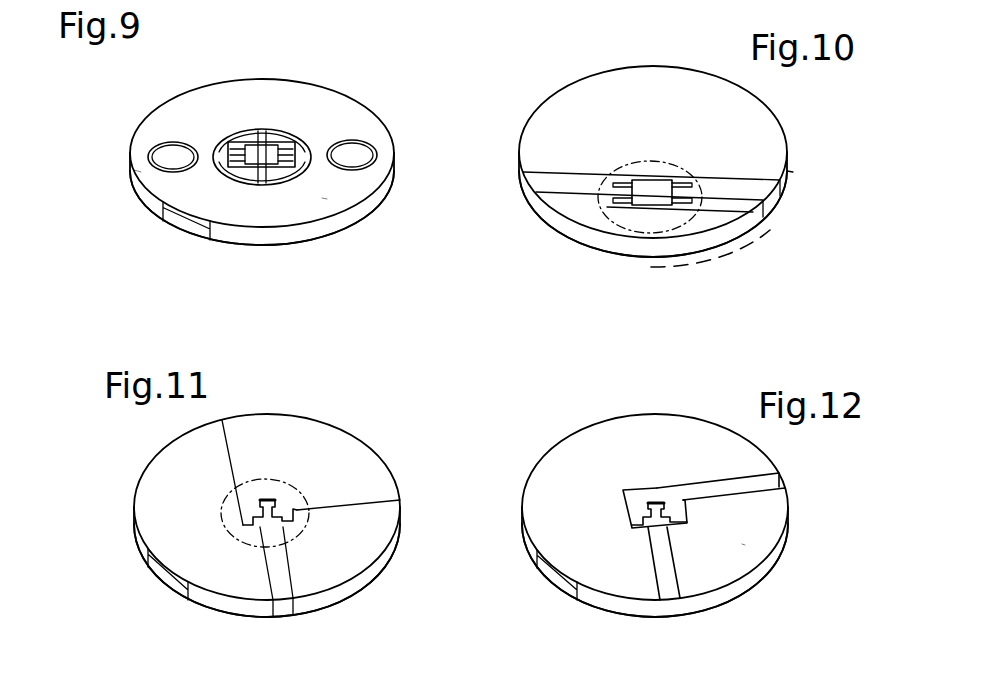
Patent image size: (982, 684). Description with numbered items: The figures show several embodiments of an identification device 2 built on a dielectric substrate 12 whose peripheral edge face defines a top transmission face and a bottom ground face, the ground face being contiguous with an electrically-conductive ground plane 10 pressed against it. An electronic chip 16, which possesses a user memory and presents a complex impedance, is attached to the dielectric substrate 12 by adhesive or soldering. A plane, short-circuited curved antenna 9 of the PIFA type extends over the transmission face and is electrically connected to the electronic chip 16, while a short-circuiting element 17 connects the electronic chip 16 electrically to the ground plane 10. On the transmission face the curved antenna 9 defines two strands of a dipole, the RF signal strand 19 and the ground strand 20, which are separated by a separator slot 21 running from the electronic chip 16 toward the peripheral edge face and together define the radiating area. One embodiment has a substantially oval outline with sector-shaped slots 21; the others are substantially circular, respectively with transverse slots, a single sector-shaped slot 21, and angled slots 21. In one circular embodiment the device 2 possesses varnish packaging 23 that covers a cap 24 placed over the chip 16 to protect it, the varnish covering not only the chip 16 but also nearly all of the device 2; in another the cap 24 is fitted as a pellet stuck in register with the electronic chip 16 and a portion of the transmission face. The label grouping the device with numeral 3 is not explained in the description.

In FIG. 9, the identification device 2 is at (104, 200).
In FIG. 10, the identification device 2 is at (545, 40).
In FIG. 11, the identification device 2 is at (100, 468).
In FIG. 12, the identification device 2 is at (518, 455).
In FIG. 10, the housing 3 is at (677, 186).
In FIG. 9, the curved antenna 9 is at (195, 100).
In FIG. 10, the curved antenna 9 is at (558, 118).
In FIG. 11, the curved antenna 9 is at (267, 507).
In FIG. 12, the curved antenna 9 is at (620, 580).
In FIG. 9, the ground plane 10 is at (320, 242).
In FIG. 10, the ground plane 10 is at (608, 250).
In FIG. 11, the ground plane 10 is at (275, 617).
In FIG. 12, the ground plane 10 is at (705, 613).
In FIG. 9, the dielectric substrate 12 is at (385, 196).
In FIG. 10, the dielectric substrate 12 is at (557, 214).
In FIG. 11, the dielectric substrate 12 is at (230, 605).
In FIG. 12, the dielectric substrate 12 is at (638, 608).
In FIG. 9, the electronic chip 16 is at (274, 154).
In FIG. 10, the electronic chip 16 is at (650, 190).
In FIG. 11, the electronic chip 16 is at (265, 500).
In FIG. 12, the electronic chip 16 is at (655, 500).
In FIG. 9, the short-circuiting element 17 is at (187, 221).
In FIG. 10, the short-circuiting element 17 is at (786, 205).
In FIG. 11, the short-circuiting element 17 is at (165, 583).
In FIG. 12, the short-circuiting element 17 is at (550, 573).
In FIG. 9, the strand 19 is at (170, 152).
In FIG. 12, the strand 19 is at (655, 432).
In FIG. 9, the ground strand 20 is at (141, 172).
In FIG. 12, the ground strand 20 is at (745, 545).
In FIG. 9, the separator slot 21 is at (172, 143).
In FIG. 11, the separator slot 21 is at (286, 572).
In FIG. 12, the separator slot 21 is at (728, 490).
In FIG. 10, the varnish packaging 23 is at (773, 238).
In FIG. 10, the cap 24 is at (670, 158).
In FIG. 11, the cap 24 is at (222, 490).